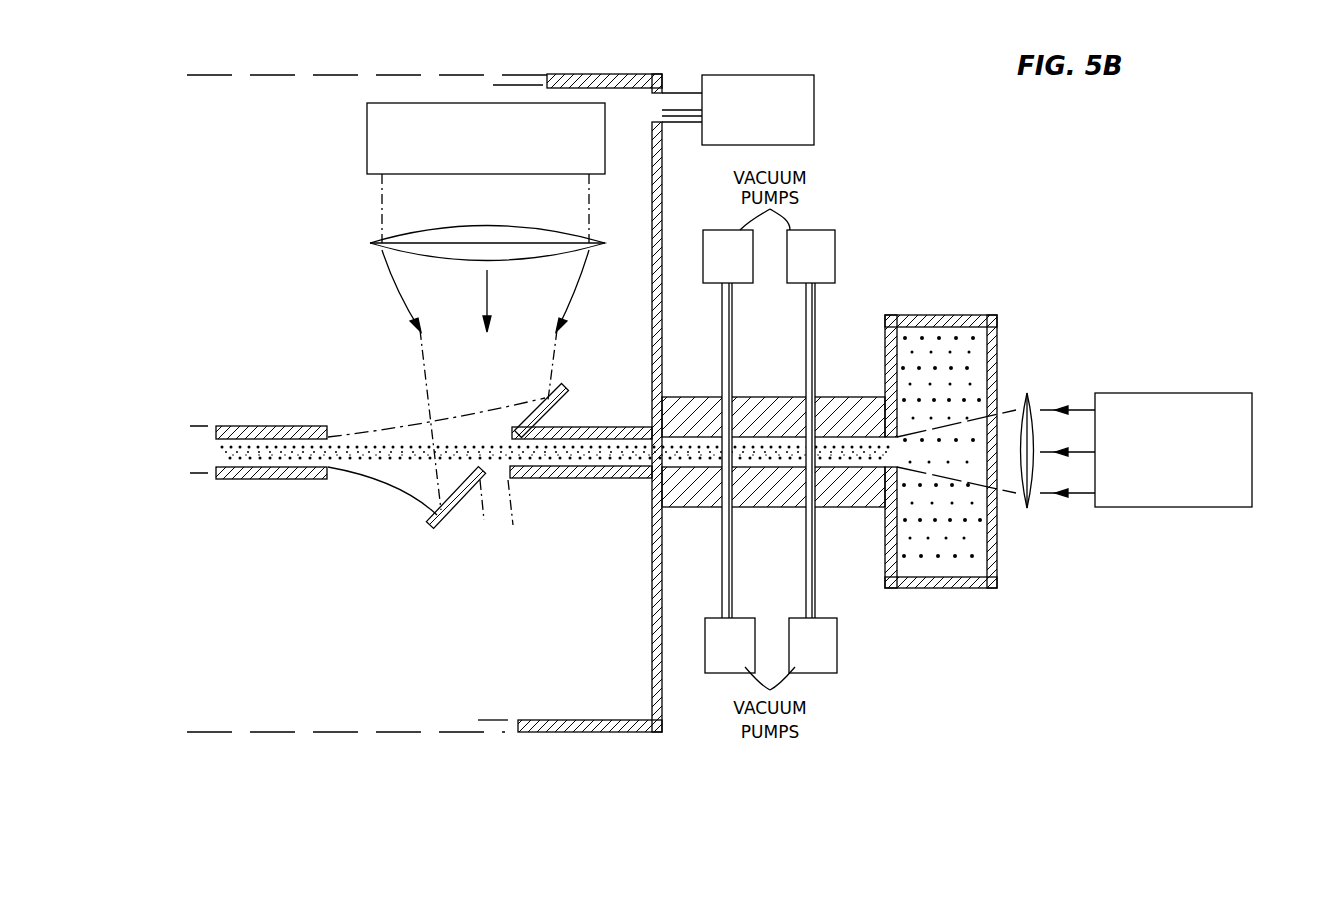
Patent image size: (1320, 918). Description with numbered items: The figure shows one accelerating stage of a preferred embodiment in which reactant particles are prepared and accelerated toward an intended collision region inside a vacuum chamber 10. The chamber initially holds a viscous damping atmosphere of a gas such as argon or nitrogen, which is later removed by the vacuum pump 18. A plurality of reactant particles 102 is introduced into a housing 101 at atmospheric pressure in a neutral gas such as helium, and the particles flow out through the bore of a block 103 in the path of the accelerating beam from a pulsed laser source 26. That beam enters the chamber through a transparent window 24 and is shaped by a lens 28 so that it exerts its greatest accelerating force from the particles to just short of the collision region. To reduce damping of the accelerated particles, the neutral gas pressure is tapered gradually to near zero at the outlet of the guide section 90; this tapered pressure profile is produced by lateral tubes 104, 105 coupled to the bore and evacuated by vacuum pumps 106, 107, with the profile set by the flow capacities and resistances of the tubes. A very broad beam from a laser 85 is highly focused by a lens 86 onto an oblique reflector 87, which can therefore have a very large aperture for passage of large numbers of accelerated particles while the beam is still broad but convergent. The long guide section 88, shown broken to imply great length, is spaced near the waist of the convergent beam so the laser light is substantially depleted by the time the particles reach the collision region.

The vacuum chamber 10 is at (612, 732).
The vacuum pump 18 is at (814, 120).
The transparent window 24 is at (1003, 495).
The pulsed laser source 26 is at (1172, 393).
The lens 28 is at (1030, 400).
The laser 85 is at (367, 126).
The lens 86 is at (400, 235).
The oblique reflector 87 is at (430, 520).
The guide section 88 is at (262, 426).
The guide section 90 is at (560, 478).
The housing 101 is at (975, 588).
The reactant particles 102 is at (938, 540).
The block 103 is at (848, 495).
The lateral tube 104 is at (810, 420).
The lateral tube 105 is at (726, 425).
The vacuum pump 106 is at (835, 248).
The vacuum pump 107 is at (703, 256).